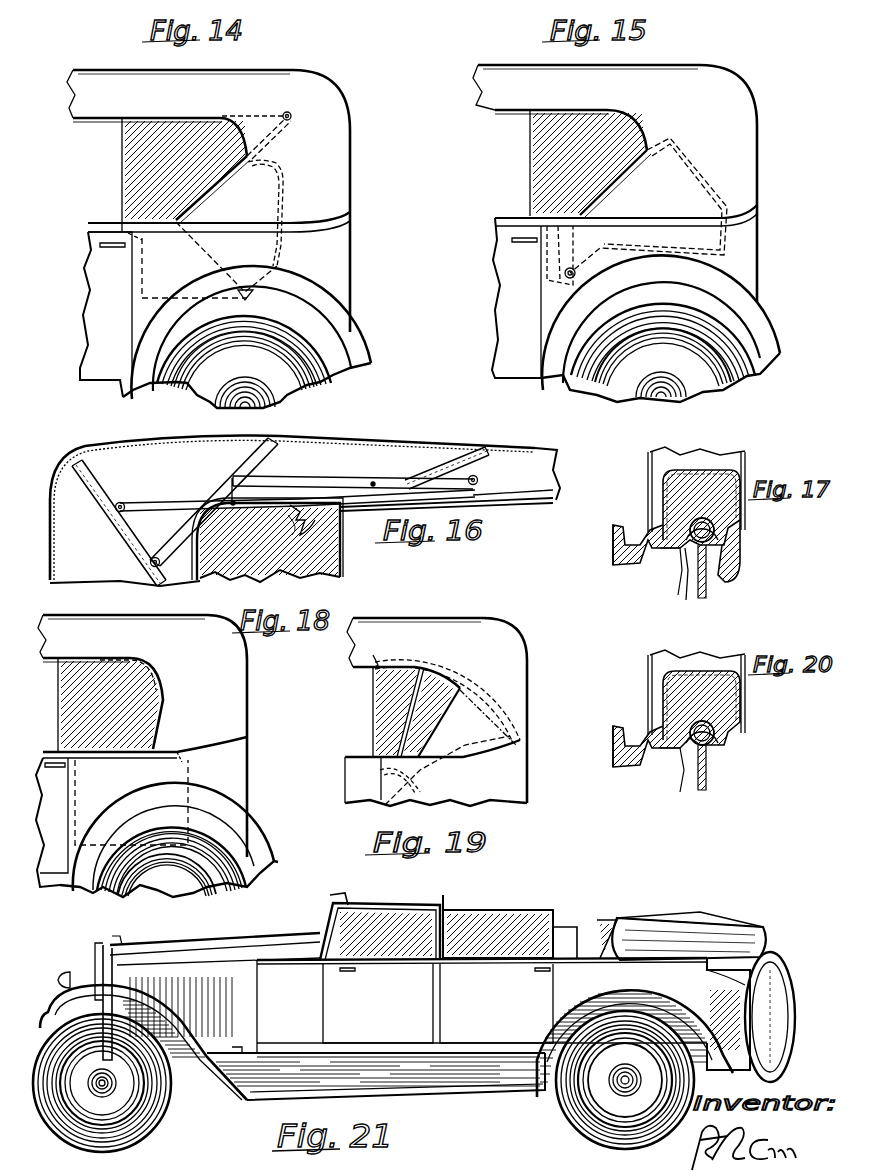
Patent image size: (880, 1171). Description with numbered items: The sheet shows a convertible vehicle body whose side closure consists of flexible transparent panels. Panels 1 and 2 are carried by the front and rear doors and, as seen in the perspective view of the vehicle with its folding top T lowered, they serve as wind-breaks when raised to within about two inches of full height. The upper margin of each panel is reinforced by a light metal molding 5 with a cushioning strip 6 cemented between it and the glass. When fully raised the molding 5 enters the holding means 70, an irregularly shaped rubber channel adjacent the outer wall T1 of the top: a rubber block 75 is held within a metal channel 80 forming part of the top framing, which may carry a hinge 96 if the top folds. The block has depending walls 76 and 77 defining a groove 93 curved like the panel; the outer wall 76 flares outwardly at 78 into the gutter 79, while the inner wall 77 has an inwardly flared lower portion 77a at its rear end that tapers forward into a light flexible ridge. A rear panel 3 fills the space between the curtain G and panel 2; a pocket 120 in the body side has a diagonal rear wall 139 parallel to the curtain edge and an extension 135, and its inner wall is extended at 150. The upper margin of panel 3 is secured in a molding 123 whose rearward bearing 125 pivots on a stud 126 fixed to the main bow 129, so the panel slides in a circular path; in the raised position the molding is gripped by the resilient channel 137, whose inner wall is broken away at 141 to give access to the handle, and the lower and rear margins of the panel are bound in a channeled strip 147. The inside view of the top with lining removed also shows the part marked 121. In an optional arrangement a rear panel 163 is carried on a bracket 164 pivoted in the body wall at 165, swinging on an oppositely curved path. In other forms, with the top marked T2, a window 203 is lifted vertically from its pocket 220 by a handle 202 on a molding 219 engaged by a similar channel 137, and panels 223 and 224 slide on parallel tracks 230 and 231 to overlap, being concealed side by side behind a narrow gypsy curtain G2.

In FIG. 14, the top T is at (122, 66).
In FIG. 15, the top T is at (510, 64).
In FIG. 16, the top T is at (360, 436).
In FIG. 21, the top T is at (752, 925).
In FIG. 17, the outer wall of the top T1 is at (640, 464).
In FIG. 20, the outer wall of the top T1 is at (640, 666).
In FIG. 18, the top (modified form) T2 is at (100, 614).
In FIG. 19, the top (modified form) T2 is at (436, 612).
In FIG. 21, the panel 1 is at (440, 903).
In FIG. 21, the panel 2 is at (553, 908).
In FIG. 14, the rear panel 3 is at (121, 160).
In FIG. 16, the rear panel 3 is at (340, 552).
In FIG. 21, the rear panel 3 is at (600, 920).
In FIG. 17, the metal molding 5 is at (710, 548).
In FIG. 20, the metal molding 5 is at (716, 740).
In FIG. 17, the cushioning strip 6 is at (707, 578).
In FIG. 20, the cushioning strip 6 is at (708, 758).
In FIG. 16, the holding means 70 is at (525, 504).
In FIG. 17, the holding means 70 is at (696, 605).
In FIG. 20, the holding means 70 is at (702, 790).
In FIG. 17, the rubber block 75 is at (662, 480).
In FIG. 20, the rubber block 75 is at (662, 682).
In FIG. 17, the outer wall 76 is at (670, 560).
In FIG. 20, the outer wall 76 is at (672, 760).
In FIG. 17, the inner wall 77 is at (744, 535).
In FIG. 17, the inwardly flared lower portion 77a is at (742, 575).
In FIG. 17, the outward flare 78 is at (686, 590).
In FIG. 17, the gutter 79 is at (620, 524).
In FIG. 20, the gutter 79 is at (622, 726).
In FIG. 16, the metal channel 80 is at (500, 490).
In FIG. 17, the metal channel 80 is at (712, 470).
In FIG. 20, the metal channel 80 is at (700, 674).
In FIG. 17, the groove 93 is at (742, 510).
In FIG. 20, the groove 93 is at (742, 700).
In FIG. 16, the hinge 96 is at (475, 484).
In FIG. 14, the pocket 120 is at (142, 268).
In FIG. 16, the link bar 121 is at (262, 498).
In FIG. 14, the molding 123 is at (216, 184).
In FIG. 16, the molding 123 is at (186, 503).
In FIG. 14, the bearing 125 is at (292, 118).
In FIG. 16, the bearing 125 is at (120, 503).
In FIG. 14, the stud 126 is at (287, 112).
In FIG. 16, the stud 126 is at (124, 510).
In FIG. 16, the main bow 129 is at (105, 516).
In FIG. 14, the extension of pocket 135 is at (302, 236).
In FIG. 14, the channel 137 is at (160, 116).
In FIG. 16, the channel 137 is at (257, 512).
In FIG. 18, the channel 137 is at (90, 657).
In FIG. 14, the diagonal rear wall 139 is at (244, 262).
In FIG. 16, the break in channel wall 141 is at (316, 522).
In FIG. 14, the channeled strip 147 is at (121, 220).
In FIG. 16, the channeled strip 147 is at (197, 580).
In FIG. 14, the pocket wall extension 150 is at (96, 241).
In FIG. 15, the rear panel 163 is at (529, 155).
In FIG. 15, the bracket 164 is at (594, 212).
In FIG. 15, the pivot 165 is at (562, 278).
In FIG. 14, the curtain G is at (284, 192).
In FIG. 15, the curtain G is at (683, 190).
In FIG. 19, the narrow gypsy curtain G2 is at (484, 748).
In FIG. 18, the lifting handle 202 is at (106, 655).
In FIG. 18, the rear panel 203 is at (58, 708).
In FIG. 18, the molding 219 is at (58, 750).
In FIG. 18, the pocket 220 is at (192, 760).
In FIG. 19, the panel 223 is at (374, 718).
In FIG. 19, the panel 224 is at (434, 728).
In FIG. 19, the track 230 is at (500, 724).
In FIG. 19, the track 231 is at (388, 808).